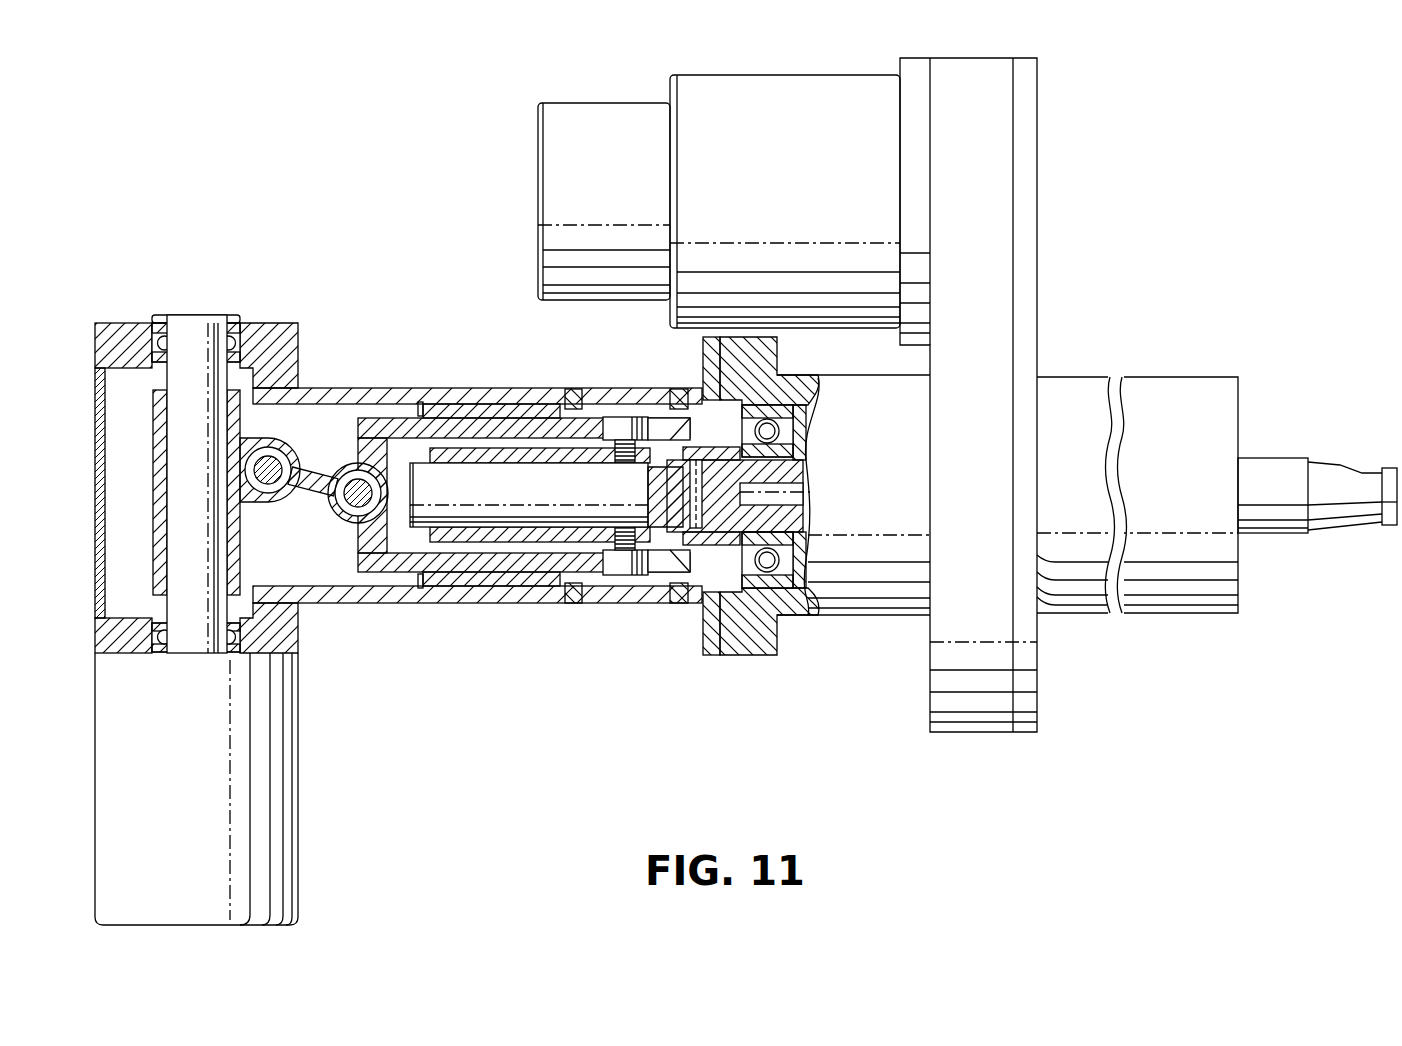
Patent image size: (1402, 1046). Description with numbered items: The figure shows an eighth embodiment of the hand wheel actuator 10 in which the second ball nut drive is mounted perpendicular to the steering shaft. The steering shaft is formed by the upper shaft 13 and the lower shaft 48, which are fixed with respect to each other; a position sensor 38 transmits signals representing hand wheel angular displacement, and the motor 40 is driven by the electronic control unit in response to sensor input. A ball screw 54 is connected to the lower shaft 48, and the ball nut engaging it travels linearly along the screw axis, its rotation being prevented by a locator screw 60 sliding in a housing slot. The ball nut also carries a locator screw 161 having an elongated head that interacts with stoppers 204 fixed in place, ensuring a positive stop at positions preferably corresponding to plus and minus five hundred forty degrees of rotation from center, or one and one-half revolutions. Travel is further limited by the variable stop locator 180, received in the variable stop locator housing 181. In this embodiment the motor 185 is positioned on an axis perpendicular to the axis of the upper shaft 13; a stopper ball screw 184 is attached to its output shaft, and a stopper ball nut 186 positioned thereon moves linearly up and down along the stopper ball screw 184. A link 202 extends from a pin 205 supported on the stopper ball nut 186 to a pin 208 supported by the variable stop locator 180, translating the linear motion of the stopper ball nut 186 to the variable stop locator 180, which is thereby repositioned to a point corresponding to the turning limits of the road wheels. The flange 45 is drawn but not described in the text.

The hand wheel actuator 10 is at (1194, 242).
The upper shaft 13 is at (1265, 466).
The position sensor 38 is at (556, 540).
The motor 40 is at (868, 183).
The mounting flange 45 is at (1042, 236).
The lower shaft 48 is at (795, 517).
The ball screw 54 is at (484, 512).
The locator screw 60 is at (622, 565).
The locator screw 161 is at (625, 418).
The variable stop locator 180 is at (396, 417).
The variable stop locator housing 181 is at (535, 605).
The stopper ball screw 184 is at (218, 388).
The motor 185 is at (262, 822).
The stopper ball nut 186 is at (158, 412).
The link 202 is at (312, 460).
The stoppers 204 is at (573, 394).
The pin 205 is at (290, 500).
The pin 208 is at (400, 556).